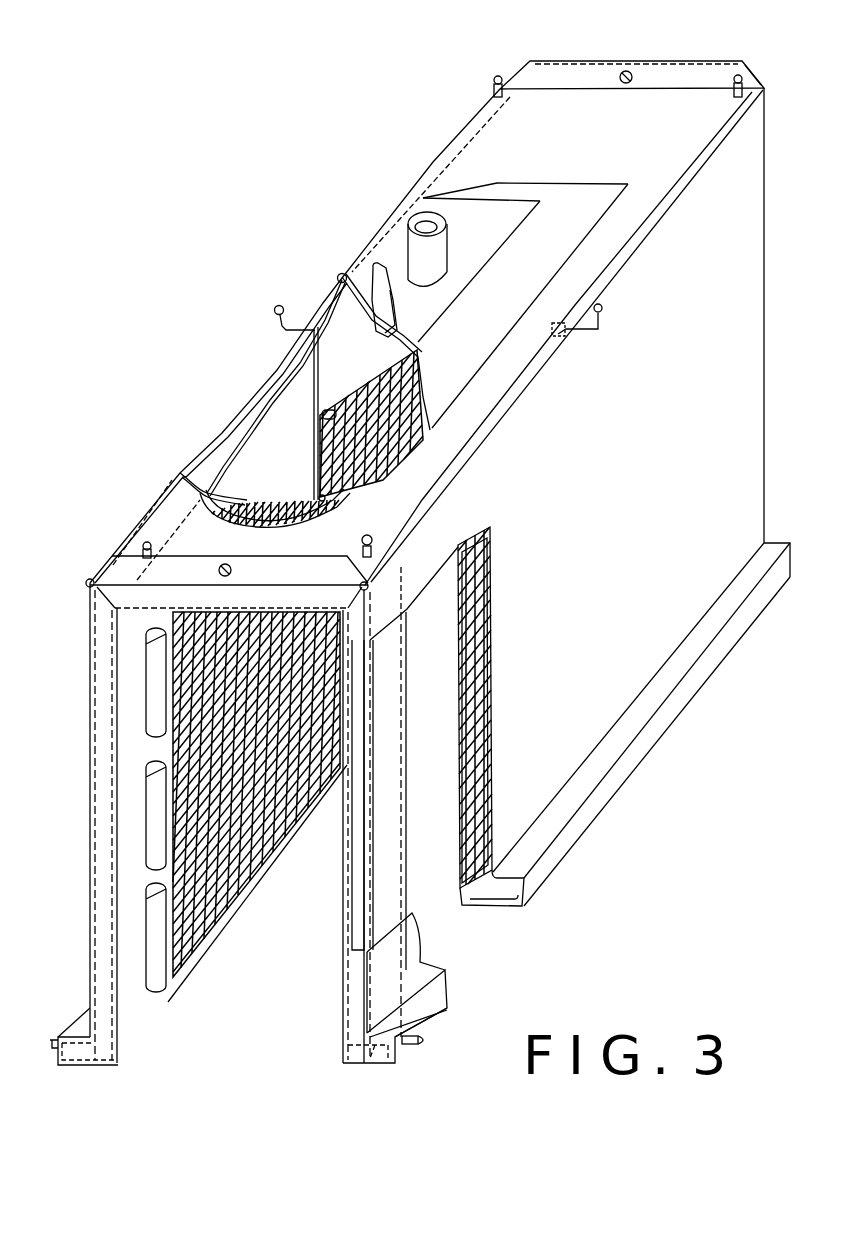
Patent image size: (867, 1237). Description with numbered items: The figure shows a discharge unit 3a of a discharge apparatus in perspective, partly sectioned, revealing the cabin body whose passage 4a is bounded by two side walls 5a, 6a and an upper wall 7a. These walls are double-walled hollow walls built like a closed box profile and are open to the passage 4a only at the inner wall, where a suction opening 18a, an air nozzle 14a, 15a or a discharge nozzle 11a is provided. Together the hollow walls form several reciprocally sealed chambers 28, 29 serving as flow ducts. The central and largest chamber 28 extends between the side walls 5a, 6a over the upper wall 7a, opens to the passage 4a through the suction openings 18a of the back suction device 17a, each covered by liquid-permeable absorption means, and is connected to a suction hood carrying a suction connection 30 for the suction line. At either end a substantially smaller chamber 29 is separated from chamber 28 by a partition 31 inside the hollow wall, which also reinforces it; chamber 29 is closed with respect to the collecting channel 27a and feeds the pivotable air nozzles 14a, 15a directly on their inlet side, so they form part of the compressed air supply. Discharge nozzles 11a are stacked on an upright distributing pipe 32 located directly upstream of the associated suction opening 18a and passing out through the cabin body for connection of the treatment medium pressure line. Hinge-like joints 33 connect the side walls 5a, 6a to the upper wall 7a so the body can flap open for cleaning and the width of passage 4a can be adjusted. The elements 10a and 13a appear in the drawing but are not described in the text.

The discharge unit 3a is at (377, 80).
The passage 4a is at (257, 1016).
The side wall 5a is at (748, 470).
The side wall 6a is at (243, 424).
The upper wall 7a is at (645, 112).
The hanger 10a is at (300, 298).
The discharge nozzle 11a is at (336, 410).
The front post 13a is at (130, 838).
The air nozzle 14a is at (170, 985).
The air nozzle 15a is at (146, 786).
The back suction device 17a is at (493, 170).
The suction opening 18a is at (284, 503).
The collecting channel 27a is at (530, 920).
The chamber 28 is at (221, 476).
The chamber 29 is at (366, 745).
The suction connection 30 is at (432, 250).
The partition 31 is at (393, 826).
The distributing pipe 32 is at (297, 403).
The hinge-like joint 33 is at (484, 444).